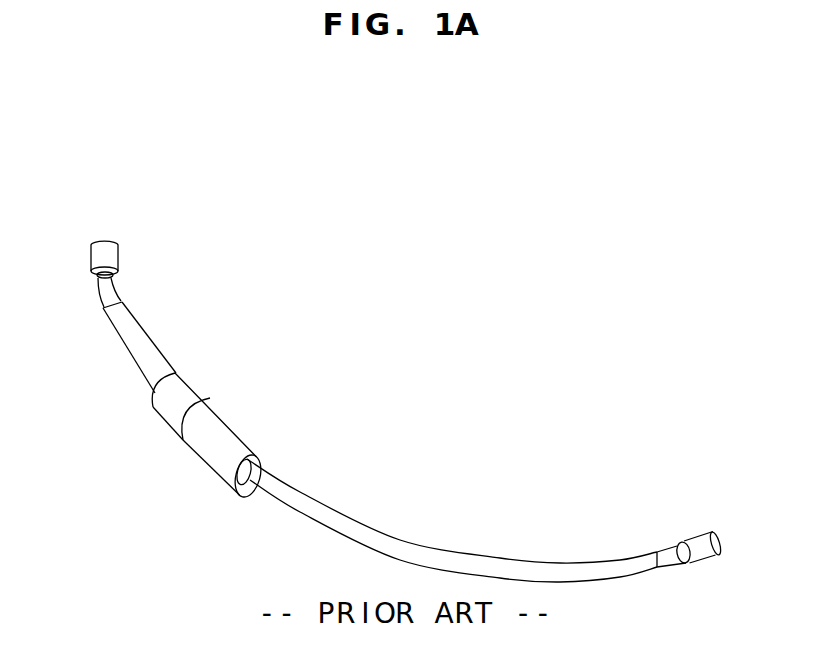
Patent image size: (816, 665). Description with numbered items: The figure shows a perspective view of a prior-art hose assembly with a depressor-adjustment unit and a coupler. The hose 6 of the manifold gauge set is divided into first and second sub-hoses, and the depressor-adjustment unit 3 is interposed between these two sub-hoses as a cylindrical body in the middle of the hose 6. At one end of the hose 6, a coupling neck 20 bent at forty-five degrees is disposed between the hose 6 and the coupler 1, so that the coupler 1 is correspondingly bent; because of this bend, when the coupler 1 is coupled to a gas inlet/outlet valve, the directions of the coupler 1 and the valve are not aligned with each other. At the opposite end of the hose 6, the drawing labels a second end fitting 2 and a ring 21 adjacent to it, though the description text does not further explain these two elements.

The coupler 1 is at (123, 225).
The coupling neck 20 is at (93, 292).
The hose 6 is at (162, 328).
The depressor-adjustment unit 3 is at (258, 402).
The connector ring 21 is at (668, 538).
The second connector 2 is at (707, 528).